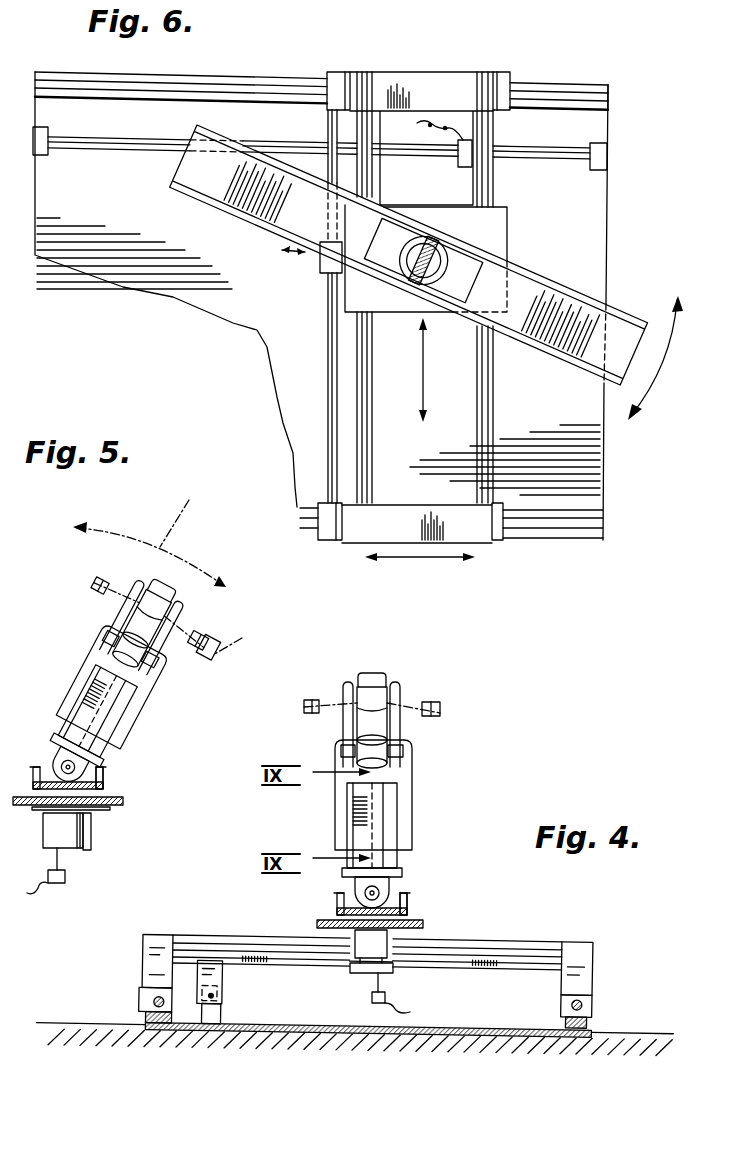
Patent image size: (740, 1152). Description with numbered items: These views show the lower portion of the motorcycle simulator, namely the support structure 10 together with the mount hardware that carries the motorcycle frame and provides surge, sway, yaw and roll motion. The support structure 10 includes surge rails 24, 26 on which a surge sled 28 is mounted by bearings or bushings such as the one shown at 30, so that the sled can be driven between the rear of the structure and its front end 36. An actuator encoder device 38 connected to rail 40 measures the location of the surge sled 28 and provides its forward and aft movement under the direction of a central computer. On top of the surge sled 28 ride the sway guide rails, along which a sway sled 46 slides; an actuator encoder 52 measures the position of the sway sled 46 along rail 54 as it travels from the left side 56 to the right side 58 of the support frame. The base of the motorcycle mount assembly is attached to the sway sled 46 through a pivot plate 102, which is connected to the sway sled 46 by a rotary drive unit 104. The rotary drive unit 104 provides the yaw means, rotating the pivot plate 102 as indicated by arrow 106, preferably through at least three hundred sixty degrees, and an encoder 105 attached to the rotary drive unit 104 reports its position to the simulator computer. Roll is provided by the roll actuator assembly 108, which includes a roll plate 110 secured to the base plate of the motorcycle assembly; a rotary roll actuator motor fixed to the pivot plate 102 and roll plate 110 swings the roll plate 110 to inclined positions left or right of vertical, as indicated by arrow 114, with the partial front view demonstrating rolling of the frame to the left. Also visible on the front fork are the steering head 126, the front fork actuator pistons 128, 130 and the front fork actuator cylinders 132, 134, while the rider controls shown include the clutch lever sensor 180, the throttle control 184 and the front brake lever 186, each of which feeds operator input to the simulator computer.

In FIG. 6, the support structure 10 is at (565, 68).
In FIG. 4, the support structure 10 is at (597, 1019).
In FIG. 4, the surge rail 24 is at (153, 996).
In FIG. 4, the surge rail 26 is at (583, 994).
In FIG. 6, the surge sled 28 is at (430, 87).
In FIG. 4, the surge sled 28 is at (155, 967).
In FIG. 4, the bearing or bushing 30 is at (570, 1010).
In FIG. 6, the front end 36 is at (33, 113).
In FIG. 6, the actuator encoder device 38 is at (466, 165).
In FIG. 4, the actuator encoder device 38 is at (200, 990).
In FIG. 6, the rail 40 is at (110, 143).
In FIG. 4, the rail 40 is at (513, 957).
In FIG. 6, the sway sled 46 is at (487, 228).
In FIG. 5, the sway sled 46 is at (123, 803).
In FIG. 4, the sway sled 46 is at (425, 921).
In FIG. 6, the actuator encoder 52 is at (320, 263).
In FIG. 4, the actuator encoder 52 is at (372, 950).
In FIG. 4, the rail 54 is at (533, 942).
In FIG. 6, the left side 56 is at (577, 542).
In FIG. 6, the right side 58 is at (237, 77).
In FIG. 4, the right side 58 is at (147, 1018).
In FIG. 6, the pivot plate 102 is at (615, 328).
In FIG. 5, the pivot plate 102 is at (100, 775).
In FIG. 4, the pivot plate 102 is at (405, 912).
In FIG. 5, the rotary drive unit 104 is at (90, 833).
In FIG. 4, the rotary drive unit 104 is at (353, 977).
In FIG. 5, the encoder 105 is at (68, 877).
In FIG. 4, the encoder 105 is at (405, 987).
In FIG. 6, the arrow 106 is at (663, 367).
In FIG. 5, the roll actuator assembly 108 is at (45, 755).
In FIG. 4, the roll actuator assembly 108 is at (338, 886).
In FIG. 5, the roll plate 110 is at (67, 733).
In FIG. 4, the roll plate 110 is at (407, 897).
In FIG. 5, the arrow 114 is at (189, 500).
In FIG. 5, the steering head 126 is at (161, 590).
In FIG. 4, the steering head 126 is at (390, 680).
In FIG. 5, the front fork actuator piston 128 is at (165, 665).
In FIG. 4, the front fork actuator piston 128 is at (410, 765).
In FIG. 5, the front fork actuator piston 130 is at (110, 633).
In FIG. 4, the front fork actuator piston 130 is at (342, 768).
In FIG. 5, the front fork actuator cylinder 132 is at (133, 720).
In FIG. 4, the front fork actuator cylinder 132 is at (412, 797).
In FIG. 5, the front fork actuator cylinder 134 is at (87, 677).
In FIG. 4, the front fork actuator cylinder 134 is at (338, 828).
In FIG. 5, the clutch lever sensor 180 is at (242, 638).
In FIG. 5, the throttle control 184 is at (110, 565).
In FIG. 4, the throttle control 184 is at (315, 705).
In FIG. 5, the front brake lever 186 is at (108, 583).
In FIG. 4, the front brake lever 186 is at (313, 718).